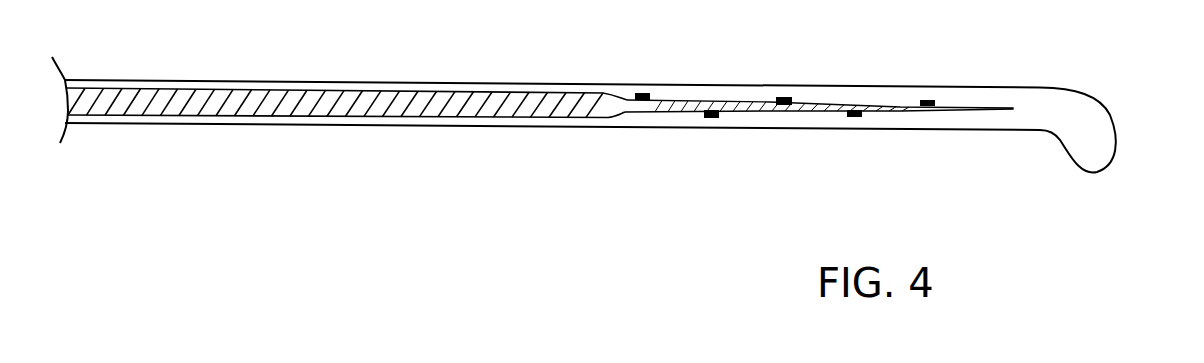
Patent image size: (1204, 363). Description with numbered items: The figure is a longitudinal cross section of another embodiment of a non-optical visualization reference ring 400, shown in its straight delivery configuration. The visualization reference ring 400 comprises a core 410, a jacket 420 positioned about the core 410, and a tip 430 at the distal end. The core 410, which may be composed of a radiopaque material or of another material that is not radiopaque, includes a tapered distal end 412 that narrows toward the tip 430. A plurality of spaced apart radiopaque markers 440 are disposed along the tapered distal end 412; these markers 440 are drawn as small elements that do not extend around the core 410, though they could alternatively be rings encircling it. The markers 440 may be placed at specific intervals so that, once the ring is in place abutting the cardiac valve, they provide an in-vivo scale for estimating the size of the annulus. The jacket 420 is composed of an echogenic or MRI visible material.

The non-optical visualization reference ring 400 is at (708, 305).
The core 410 is at (455, 106).
The tapered distal end 412 is at (657, 107).
The jacket 420 is at (740, 86).
The tip 430 is at (1100, 151).
The radiopaque markers 440 is at (863, 116).